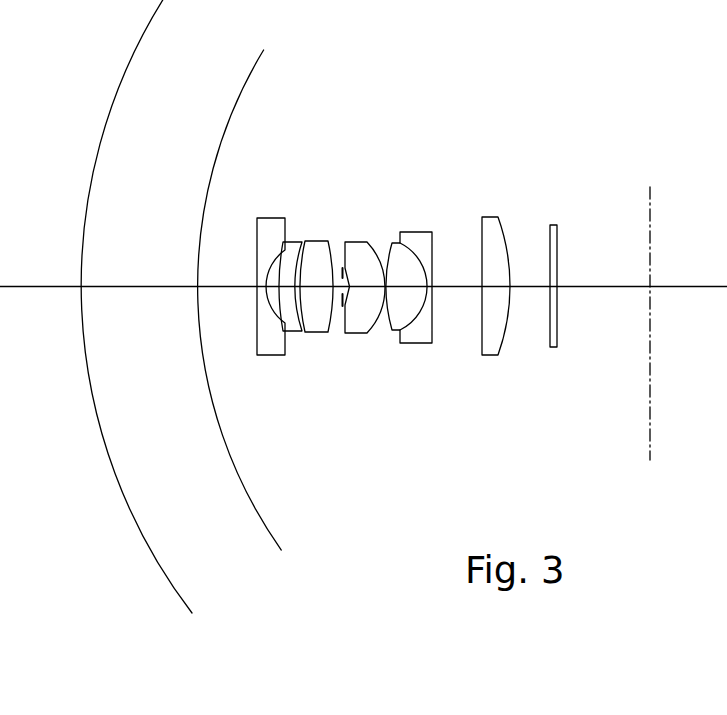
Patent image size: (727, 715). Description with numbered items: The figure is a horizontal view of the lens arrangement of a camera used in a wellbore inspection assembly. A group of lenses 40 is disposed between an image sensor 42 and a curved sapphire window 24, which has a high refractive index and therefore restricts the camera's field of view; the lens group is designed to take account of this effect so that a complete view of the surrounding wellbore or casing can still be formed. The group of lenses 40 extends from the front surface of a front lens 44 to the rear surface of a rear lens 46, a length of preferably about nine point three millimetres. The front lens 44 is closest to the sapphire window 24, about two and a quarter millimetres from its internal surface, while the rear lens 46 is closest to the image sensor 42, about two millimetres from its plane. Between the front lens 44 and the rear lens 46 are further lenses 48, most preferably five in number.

The sapphire window 24 is at (225, 510).
The group of lenses 40 is at (495, 195).
The image sensor 42 is at (553, 347).
The front lens 44 is at (273, 343).
The rear lens 46 is at (493, 343).
The further lens 48 is at (435, 340).